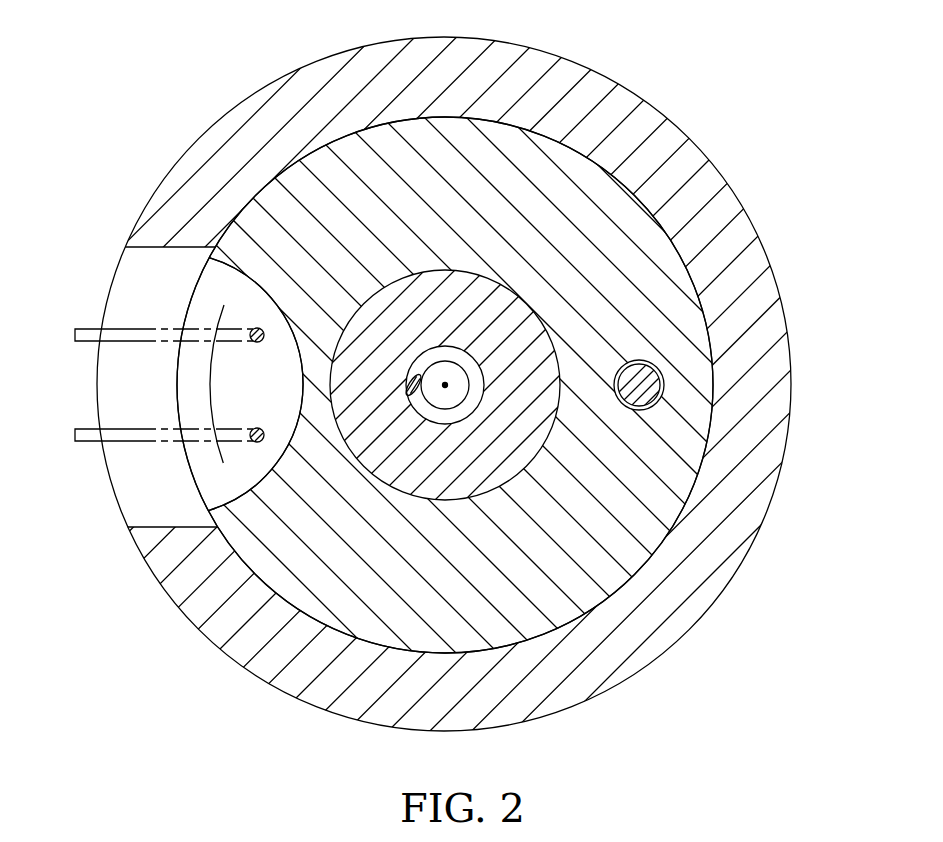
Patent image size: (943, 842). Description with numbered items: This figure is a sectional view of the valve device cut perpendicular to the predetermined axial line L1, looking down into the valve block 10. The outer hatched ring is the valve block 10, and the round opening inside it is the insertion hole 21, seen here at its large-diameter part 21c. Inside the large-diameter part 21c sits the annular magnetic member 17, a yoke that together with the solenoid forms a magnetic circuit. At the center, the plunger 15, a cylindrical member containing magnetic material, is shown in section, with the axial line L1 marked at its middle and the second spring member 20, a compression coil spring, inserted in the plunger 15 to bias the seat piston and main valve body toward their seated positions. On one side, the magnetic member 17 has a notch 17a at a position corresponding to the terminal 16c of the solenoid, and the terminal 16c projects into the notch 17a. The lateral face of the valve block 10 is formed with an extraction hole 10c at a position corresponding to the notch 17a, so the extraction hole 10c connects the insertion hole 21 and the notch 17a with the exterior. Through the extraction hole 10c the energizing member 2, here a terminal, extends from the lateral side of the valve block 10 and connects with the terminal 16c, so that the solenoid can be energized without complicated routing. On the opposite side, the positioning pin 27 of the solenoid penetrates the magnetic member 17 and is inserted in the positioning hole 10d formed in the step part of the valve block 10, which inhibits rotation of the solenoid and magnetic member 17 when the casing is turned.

The valve block 10 is at (572, 78).
The large-diameter part 21c is at (432, 124).
The insertion hole 21 is at (445, 364).
The extraction hole 10c is at (148, 247).
The notch 17a is at (203, 310).
The magnetic member 17 is at (703, 382).
The energizing member 2 is at (121, 432).
The terminal 16c is at (256, 427).
The plunger 15 is at (513, 292).
The second spring member 20 is at (419, 359).
The axial line L1 is at (446, 384).
The positioning hole 10d is at (639, 360).
The positioning pin 27 is at (639, 411).